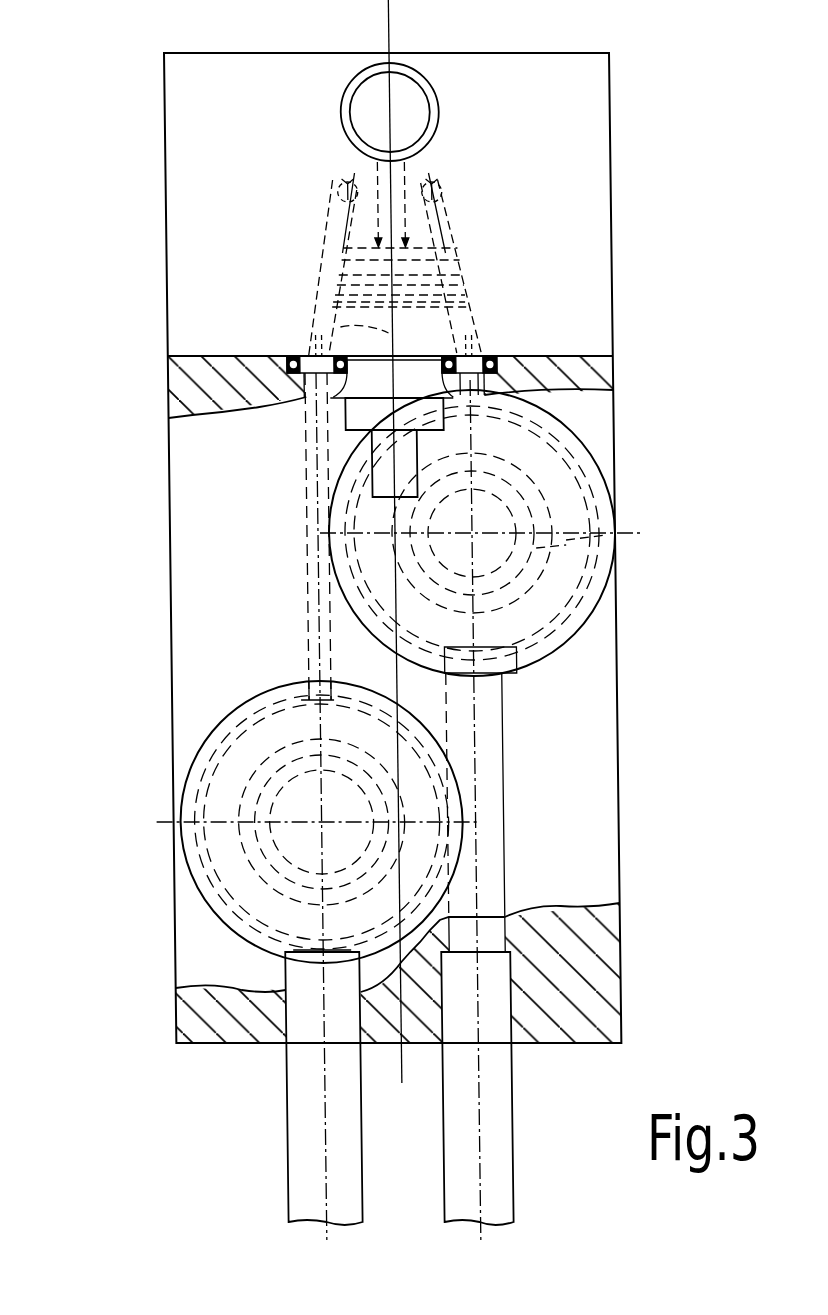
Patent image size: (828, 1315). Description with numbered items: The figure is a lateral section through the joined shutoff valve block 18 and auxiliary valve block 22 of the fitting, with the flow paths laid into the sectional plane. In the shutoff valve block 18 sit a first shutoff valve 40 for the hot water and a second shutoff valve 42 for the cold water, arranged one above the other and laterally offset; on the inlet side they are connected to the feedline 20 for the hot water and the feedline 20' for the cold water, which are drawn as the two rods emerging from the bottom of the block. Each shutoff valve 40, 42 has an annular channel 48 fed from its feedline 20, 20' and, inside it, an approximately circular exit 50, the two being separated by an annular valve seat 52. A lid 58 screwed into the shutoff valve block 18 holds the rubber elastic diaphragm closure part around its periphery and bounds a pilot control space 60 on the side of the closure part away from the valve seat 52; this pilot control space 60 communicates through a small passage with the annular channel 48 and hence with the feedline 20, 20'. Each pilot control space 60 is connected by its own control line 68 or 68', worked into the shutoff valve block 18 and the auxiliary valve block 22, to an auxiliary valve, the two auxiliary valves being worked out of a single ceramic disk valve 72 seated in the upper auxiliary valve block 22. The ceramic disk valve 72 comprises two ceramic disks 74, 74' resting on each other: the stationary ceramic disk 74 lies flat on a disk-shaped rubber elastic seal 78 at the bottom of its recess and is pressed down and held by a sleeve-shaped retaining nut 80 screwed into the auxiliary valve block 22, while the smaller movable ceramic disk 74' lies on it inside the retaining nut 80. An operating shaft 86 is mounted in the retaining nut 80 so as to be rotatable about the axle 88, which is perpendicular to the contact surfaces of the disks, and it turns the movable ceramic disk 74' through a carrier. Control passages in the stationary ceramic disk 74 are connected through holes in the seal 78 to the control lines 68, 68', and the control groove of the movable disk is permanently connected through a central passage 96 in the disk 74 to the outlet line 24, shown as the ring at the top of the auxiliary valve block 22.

The shutoff valve block 18 is at (612, 835).
The feedline for the hot water 20 is at (294, 1087).
The feedline for the cold water 20' is at (451, 1088).
The auxiliary valve block 22 is at (612, 171).
The outlet line 24 is at (400, 93).
The first shutoff valve 40 is at (178, 881).
The second shutoff valve 42 is at (595, 458).
The annular channel 48 is at (571, 503).
The exit 50 is at (614, 562).
The annular valve seat 52 is at (583, 610).
The lid 58 is at (572, 442).
The pilot control space 60 is at (554, 482).
The control line 68 is at (283, 536).
The control line 68' is at (511, 628).
The ceramic disk valve 72 is at (463, 270).
The ceramic disk 74 is at (355, 257).
The ceramic disk 74' is at (360, 295).
The seal 78 is at (326, 240).
The retaining nut 80 is at (339, 397).
The operating shaft 86 is at (365, 485).
The axle 88 is at (337, 327).
The central passage 96 is at (393, 173).